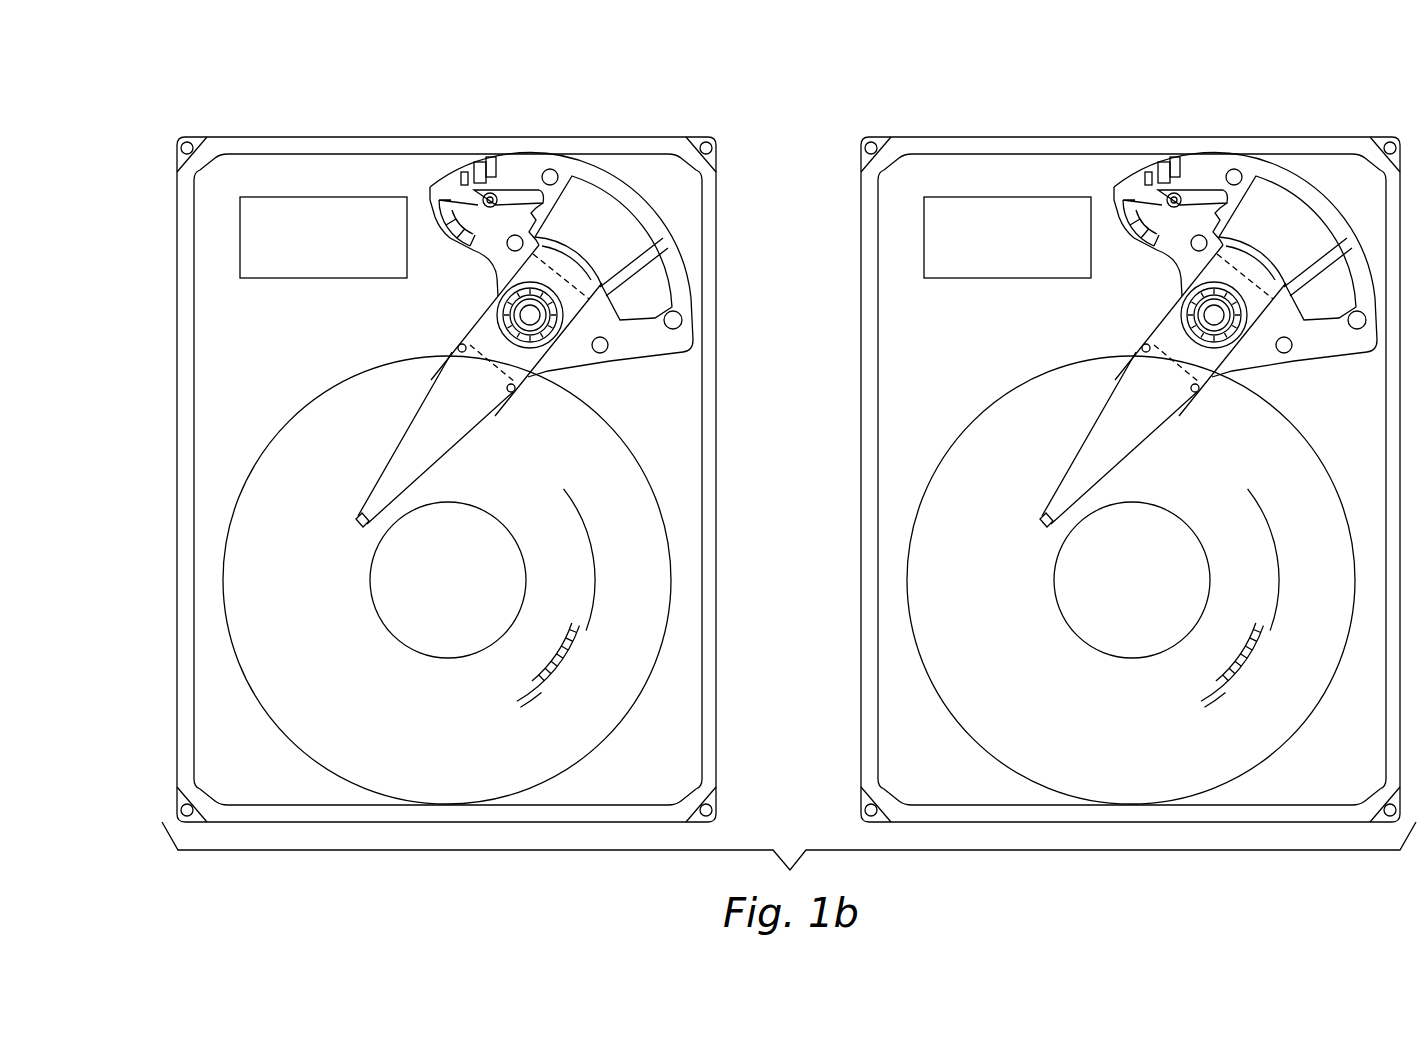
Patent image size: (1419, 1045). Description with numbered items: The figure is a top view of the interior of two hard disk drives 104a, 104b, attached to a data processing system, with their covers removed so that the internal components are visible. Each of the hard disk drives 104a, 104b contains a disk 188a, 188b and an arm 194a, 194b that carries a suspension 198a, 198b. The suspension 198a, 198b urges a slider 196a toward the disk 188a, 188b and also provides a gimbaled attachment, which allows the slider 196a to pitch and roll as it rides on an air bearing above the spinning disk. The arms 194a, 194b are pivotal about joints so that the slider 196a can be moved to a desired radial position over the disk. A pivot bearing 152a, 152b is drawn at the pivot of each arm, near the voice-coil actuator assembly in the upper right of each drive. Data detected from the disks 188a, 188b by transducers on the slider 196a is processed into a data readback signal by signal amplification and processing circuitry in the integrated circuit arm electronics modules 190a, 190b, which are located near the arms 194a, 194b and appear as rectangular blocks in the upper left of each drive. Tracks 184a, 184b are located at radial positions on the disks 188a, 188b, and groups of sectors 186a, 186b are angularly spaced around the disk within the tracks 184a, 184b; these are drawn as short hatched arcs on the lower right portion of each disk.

The hard disk drive 104a is at (655, 115).
The hard disk drive 104b is at (1130, 430).
The integrated circuit arm electronics (AE) module 190a is at (323, 237).
The integrated circuit arm electronics (AE) module 190b is at (1007, 237).
The disk 188a is at (665, 594).
The disk 188b is at (1132, 580).
The track 184a is at (553, 690).
The track 184b is at (1237, 689).
The group of sectors 186a is at (545, 656).
The group of sectors 186b is at (1186, 669).
The actuator pivot bearing of first drive 152a is at (497, 312).
The actuator pivot bearing of second drive 152b is at (1163, 315).
The arm 194a is at (458, 350).
The arm 194b is at (1163, 330).
The suspension 198a is at (490, 428).
The suspension 198b is at (1158, 438).
The slider 196a is at (357, 526).